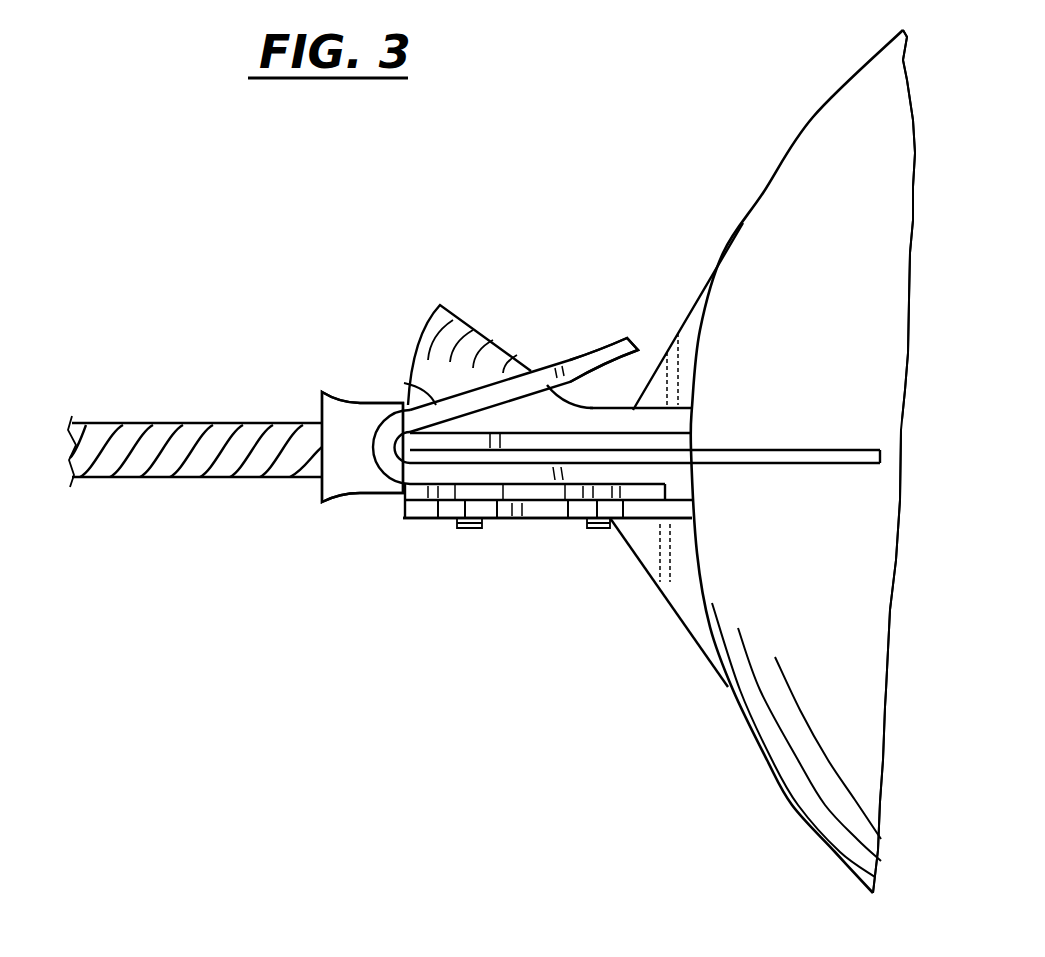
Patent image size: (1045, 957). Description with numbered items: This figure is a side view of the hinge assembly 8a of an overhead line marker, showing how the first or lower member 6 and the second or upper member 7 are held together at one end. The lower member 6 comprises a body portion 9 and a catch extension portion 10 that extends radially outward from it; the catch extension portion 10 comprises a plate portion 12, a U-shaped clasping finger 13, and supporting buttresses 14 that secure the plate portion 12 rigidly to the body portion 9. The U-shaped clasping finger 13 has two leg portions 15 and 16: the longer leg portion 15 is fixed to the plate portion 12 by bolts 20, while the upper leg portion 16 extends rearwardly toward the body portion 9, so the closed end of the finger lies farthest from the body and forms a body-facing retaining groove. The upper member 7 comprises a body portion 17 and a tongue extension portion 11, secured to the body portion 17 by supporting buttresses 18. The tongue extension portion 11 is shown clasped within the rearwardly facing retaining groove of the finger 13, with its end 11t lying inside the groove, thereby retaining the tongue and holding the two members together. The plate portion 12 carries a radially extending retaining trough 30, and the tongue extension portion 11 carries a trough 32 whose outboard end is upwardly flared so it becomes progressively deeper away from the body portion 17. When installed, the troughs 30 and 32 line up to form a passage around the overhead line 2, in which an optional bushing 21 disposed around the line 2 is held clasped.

The overhead line 2 is at (155, 440).
The first or lower member 6 is at (743, 788).
The second or upper member 7 is at (798, 104).
The hinge assembly 8a is at (371, 624).
The body portion 9 is at (808, 608).
The catch extension portion 10 is at (306, 531).
The tongue extension portion 11 is at (352, 279).
The rod tail 11t is at (660, 445).
The plate portion 12 is at (672, 475).
The U-shaped clasping finger 13 is at (588, 357).
The supporting buttress 14 is at (672, 579).
The leg portion 15 is at (538, 492).
The leg portion 16 is at (432, 402).
The body portion 17 is at (820, 371).
The supporting buttress 18 is at (698, 317).
The bolts 20 is at (459, 544).
The bushing 21 is at (322, 410).
The retaining trough 30 is at (405, 512).
The trough 32 is at (494, 320).